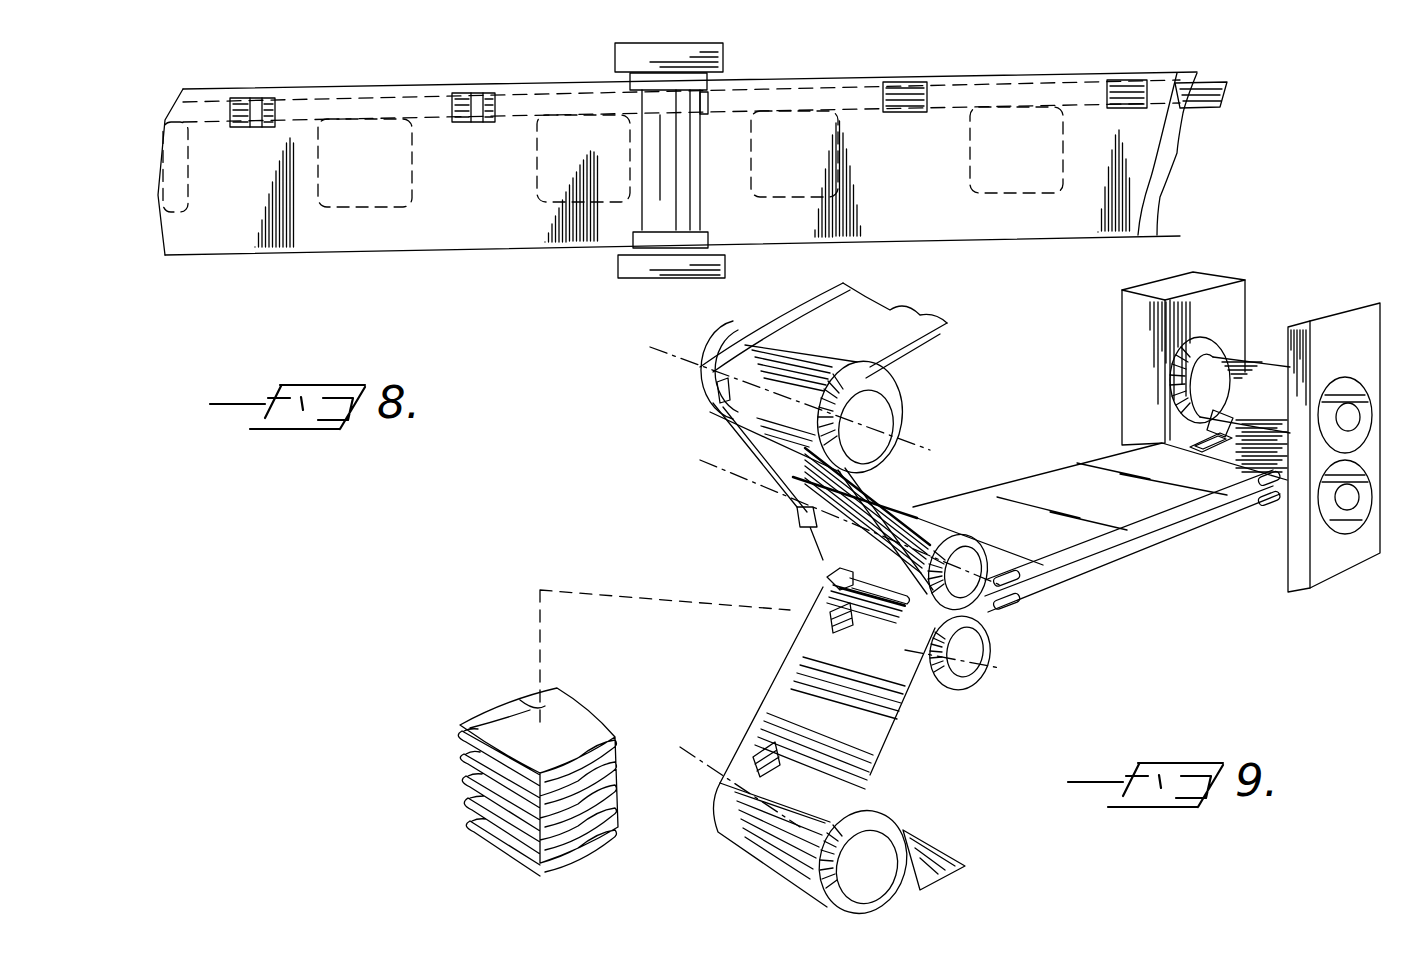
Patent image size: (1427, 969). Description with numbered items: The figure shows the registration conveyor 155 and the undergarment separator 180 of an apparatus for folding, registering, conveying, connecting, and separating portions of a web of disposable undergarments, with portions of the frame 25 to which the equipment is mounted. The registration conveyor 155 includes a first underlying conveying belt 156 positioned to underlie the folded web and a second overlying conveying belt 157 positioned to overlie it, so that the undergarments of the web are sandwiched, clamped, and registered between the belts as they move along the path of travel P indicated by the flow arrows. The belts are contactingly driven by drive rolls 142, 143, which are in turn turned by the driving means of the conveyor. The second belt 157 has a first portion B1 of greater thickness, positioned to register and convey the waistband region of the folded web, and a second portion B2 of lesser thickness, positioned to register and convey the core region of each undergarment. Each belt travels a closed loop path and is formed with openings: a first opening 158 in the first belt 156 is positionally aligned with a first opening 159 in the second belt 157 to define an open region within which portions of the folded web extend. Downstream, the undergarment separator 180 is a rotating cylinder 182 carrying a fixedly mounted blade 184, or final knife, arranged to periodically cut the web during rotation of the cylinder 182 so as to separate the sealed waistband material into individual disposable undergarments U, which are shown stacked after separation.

In FIG. 8, the frame 25 is at (618, 62).
In FIG. 9, the frame 25 is at (1329, 566).
In FIG. 8, the registration conveyor 155 is at (1287, 115).
In FIG. 9, the registration conveyor 155 is at (1025, 640).
In FIG. 8, the first underlying conveying belt 156 is at (1153, 220).
In FIG. 9, the first underlying conveying belt 156 is at (868, 778).
In FIG. 8, the second overlying conveying belt 157 is at (1143, 177).
In FIG. 9, the second overlying conveying belt 157 is at (925, 342).
In FIG. 8, the first opening of the second conveying belt 159 is at (257, 126).
In FIG. 9, the first opening of the second conveying belt 159 is at (717, 395).
In FIG. 8, the rotating cylinder 182 is at (685, 203).
In FIG. 9, the rotating cylinder 182 is at (1212, 345).
In FIG. 9, the blade 184 is at (1334, 434).
In FIG. 8, the undergarment separator 180 is at (547, 298).
In FIG. 9, the undergarment separator 180 is at (1275, 623).
In FIG. 9, the drive roll 143 is at (900, 410).
In FIG. 9, the drive roll 142 is at (947, 684).
In FIG. 9, the first opening of the first conveying belt 158 is at (828, 618).
In FIG. 8, the path of travel P is at (893, 58).
In FIG. 9, the path of travel P is at (1083, 602).
In FIG. 9, the undergarments U is at (827, 578).
In FIG. 9, the first portion of the second belt B1 is at (768, 323).
In FIG. 9, the second portion of the second belt B2 is at (890, 312).